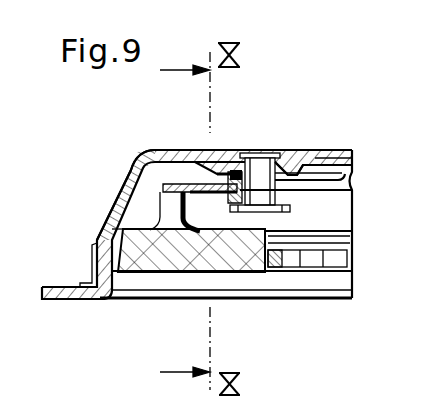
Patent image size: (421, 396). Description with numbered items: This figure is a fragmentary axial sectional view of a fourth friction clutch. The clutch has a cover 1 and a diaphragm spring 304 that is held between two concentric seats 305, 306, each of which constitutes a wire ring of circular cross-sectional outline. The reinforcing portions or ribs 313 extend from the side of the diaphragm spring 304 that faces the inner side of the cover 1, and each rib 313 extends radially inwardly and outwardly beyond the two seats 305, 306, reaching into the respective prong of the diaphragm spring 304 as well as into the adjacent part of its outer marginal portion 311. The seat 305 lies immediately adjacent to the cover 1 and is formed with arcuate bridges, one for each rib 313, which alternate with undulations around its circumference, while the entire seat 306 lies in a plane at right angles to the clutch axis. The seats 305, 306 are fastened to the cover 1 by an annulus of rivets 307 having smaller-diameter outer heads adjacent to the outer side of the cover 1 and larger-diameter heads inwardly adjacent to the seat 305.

The cover 1 is at (136, 152).
The outer marginal portion 311 is at (166, 150).
The seat 305 is at (238, 148).
The rivets 307 is at (266, 143).
The reinforcing portions or ribs 313 is at (311, 160).
The diaphragm spring 304 is at (349, 174).
The seat 306 is at (233, 200).